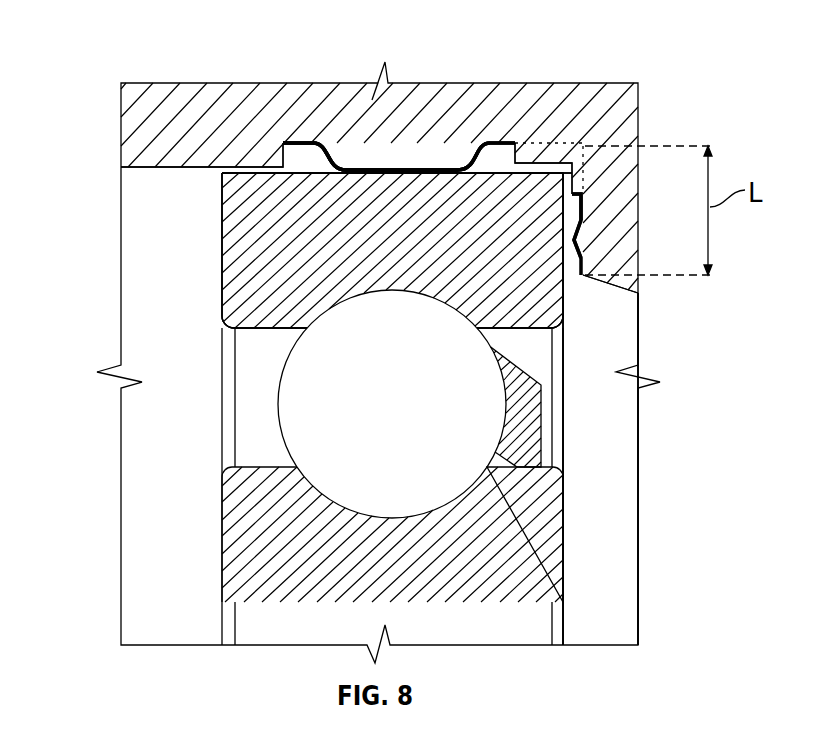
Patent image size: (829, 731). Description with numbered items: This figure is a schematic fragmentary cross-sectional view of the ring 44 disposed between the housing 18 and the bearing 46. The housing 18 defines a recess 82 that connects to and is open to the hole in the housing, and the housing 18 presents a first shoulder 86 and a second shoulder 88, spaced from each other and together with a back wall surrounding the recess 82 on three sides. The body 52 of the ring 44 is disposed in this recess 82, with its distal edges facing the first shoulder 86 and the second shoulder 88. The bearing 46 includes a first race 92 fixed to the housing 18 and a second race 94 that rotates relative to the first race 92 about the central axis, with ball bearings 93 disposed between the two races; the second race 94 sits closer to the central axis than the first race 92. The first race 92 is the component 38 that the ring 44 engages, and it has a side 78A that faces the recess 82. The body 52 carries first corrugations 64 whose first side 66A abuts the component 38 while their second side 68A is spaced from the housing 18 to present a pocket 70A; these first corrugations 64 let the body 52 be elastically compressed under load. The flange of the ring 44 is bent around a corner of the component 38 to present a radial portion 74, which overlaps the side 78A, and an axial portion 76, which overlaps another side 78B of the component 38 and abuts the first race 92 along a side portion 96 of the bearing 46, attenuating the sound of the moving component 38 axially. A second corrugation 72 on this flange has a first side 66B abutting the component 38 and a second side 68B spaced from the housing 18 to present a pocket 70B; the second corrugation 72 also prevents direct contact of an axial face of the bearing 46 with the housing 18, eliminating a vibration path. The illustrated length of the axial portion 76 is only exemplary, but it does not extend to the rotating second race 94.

The housing 18 is at (620, 106).
The first shoulder 86 is at (583, 144).
The second shoulder 88 is at (282, 160).
The radial portion 74 is at (548, 140).
The ring 44 is at (493, 145).
The body 52 is at (399, 156).
The second side of the first corrugations 68A is at (345, 152).
The pocket 70A is at (390, 153).
The recess 82 is at (442, 142).
The first corrugations 64 is at (262, 208).
The first race 92 is at (232, 270).
The first side of the first corrugations 66A is at (363, 177).
The side of the component 78A is at (527, 175).
The first side of the second corrugation 66B is at (580, 212).
The pocket 70B is at (583, 235).
The second side of the second corrugation 68B is at (585, 198).
The second corrugation 72 is at (582, 244).
The axial portion 76 is at (587, 272).
The ball bearings 93 is at (315, 392).
The second race 94 is at (222, 545).
The another side of the component 78B is at (496, 356).
The component 38 is at (568, 283).
The bearing 46 is at (600, 469).
The side portion 96 is at (568, 312).